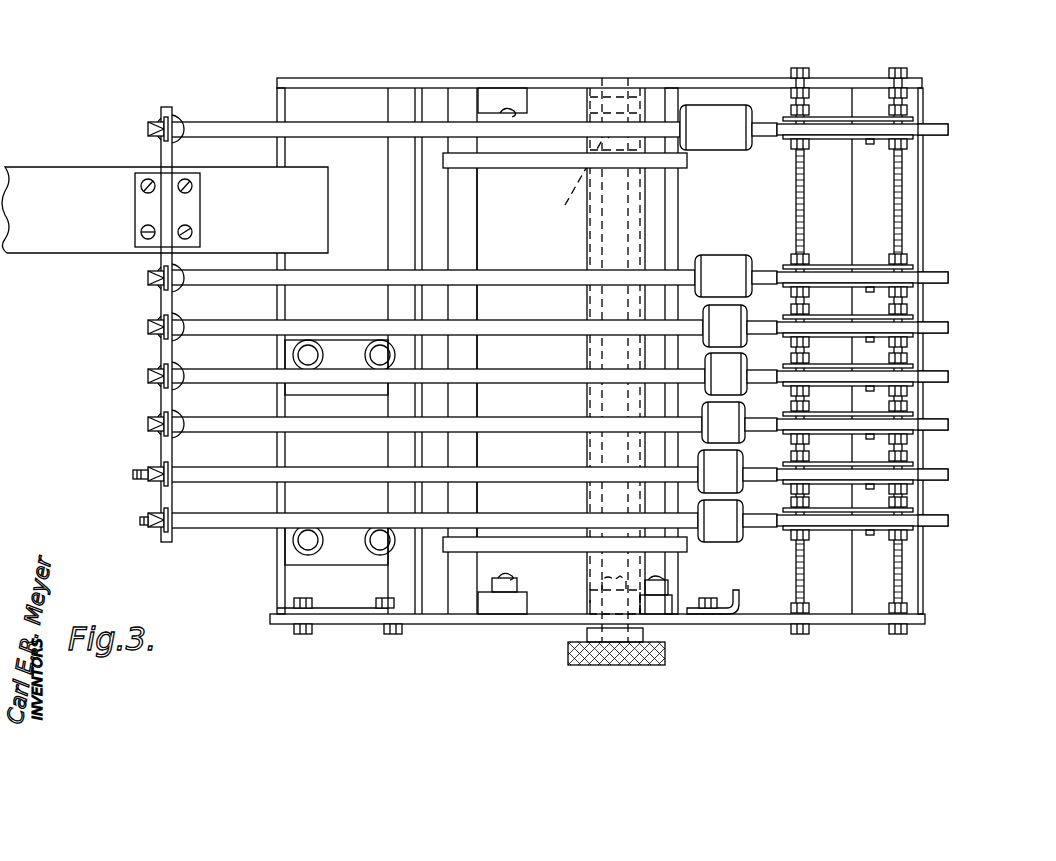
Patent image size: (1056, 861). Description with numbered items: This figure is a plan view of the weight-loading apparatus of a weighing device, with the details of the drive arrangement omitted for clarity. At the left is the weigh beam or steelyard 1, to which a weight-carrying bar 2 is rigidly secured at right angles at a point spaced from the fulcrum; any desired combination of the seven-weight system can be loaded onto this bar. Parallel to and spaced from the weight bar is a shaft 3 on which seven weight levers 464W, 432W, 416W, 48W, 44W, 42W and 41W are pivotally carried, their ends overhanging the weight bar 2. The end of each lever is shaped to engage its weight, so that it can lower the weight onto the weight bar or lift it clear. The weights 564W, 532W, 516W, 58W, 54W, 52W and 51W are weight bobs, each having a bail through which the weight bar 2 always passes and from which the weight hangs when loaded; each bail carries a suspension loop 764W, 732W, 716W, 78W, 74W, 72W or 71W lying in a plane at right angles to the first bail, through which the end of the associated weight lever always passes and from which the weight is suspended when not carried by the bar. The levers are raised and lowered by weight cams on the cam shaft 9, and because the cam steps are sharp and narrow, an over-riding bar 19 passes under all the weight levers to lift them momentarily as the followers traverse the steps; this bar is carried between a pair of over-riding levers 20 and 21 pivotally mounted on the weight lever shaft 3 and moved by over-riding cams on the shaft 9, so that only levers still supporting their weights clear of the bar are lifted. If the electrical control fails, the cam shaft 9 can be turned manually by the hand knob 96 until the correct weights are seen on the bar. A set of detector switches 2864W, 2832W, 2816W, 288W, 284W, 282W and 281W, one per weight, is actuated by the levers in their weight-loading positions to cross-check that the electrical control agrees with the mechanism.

The weigh beam or steelyard 1 is at (74, 238).
The weight-carrying bar 2 is at (165, 156).
The shaft 3 is at (470, 183).
The shaft 9 is at (601, 360).
The over-riding bar 19 is at (672, 225).
The over-riding lever 20 is at (525, 545).
The over-riding lever 21 is at (535, 160).
The hand knob 96 is at (568, 652).
The weight lever 464W is at (244, 130).
The weight lever 432W is at (244, 278).
The weight lever 416W is at (250, 330).
The weight lever 48W is at (294, 378).
The weight lever 44W is at (310, 426).
The weight lever 42W is at (303, 476).
The weight lever 41W is at (253, 523).
The weight 564W is at (178, 116).
The weight 532W is at (158, 288).
The weight 516W is at (158, 338).
The weight 58W is at (180, 386).
The weight 54W is at (180, 434).
The weight 52W is at (133, 472).
The weight 51W is at (140, 522).
The suspension loop 764W is at (148, 123).
The suspension loop 732W is at (148, 275).
The suspension loop 716W is at (148, 325).
The suspension loop 78W is at (148, 378).
The suspension loop 74W is at (148, 428).
The suspension loop 72W is at (150, 480).
The suspension loop 71W is at (165, 528).
The detector switch 2864W is at (893, 128).
The detector switch 2832W is at (893, 278).
The detector switch 2816W is at (893, 328).
The detector switch 288W is at (893, 377).
The detector switch 284W is at (893, 425).
The detector switch 282W is at (893, 475).
The detector switch 281W is at (893, 521).